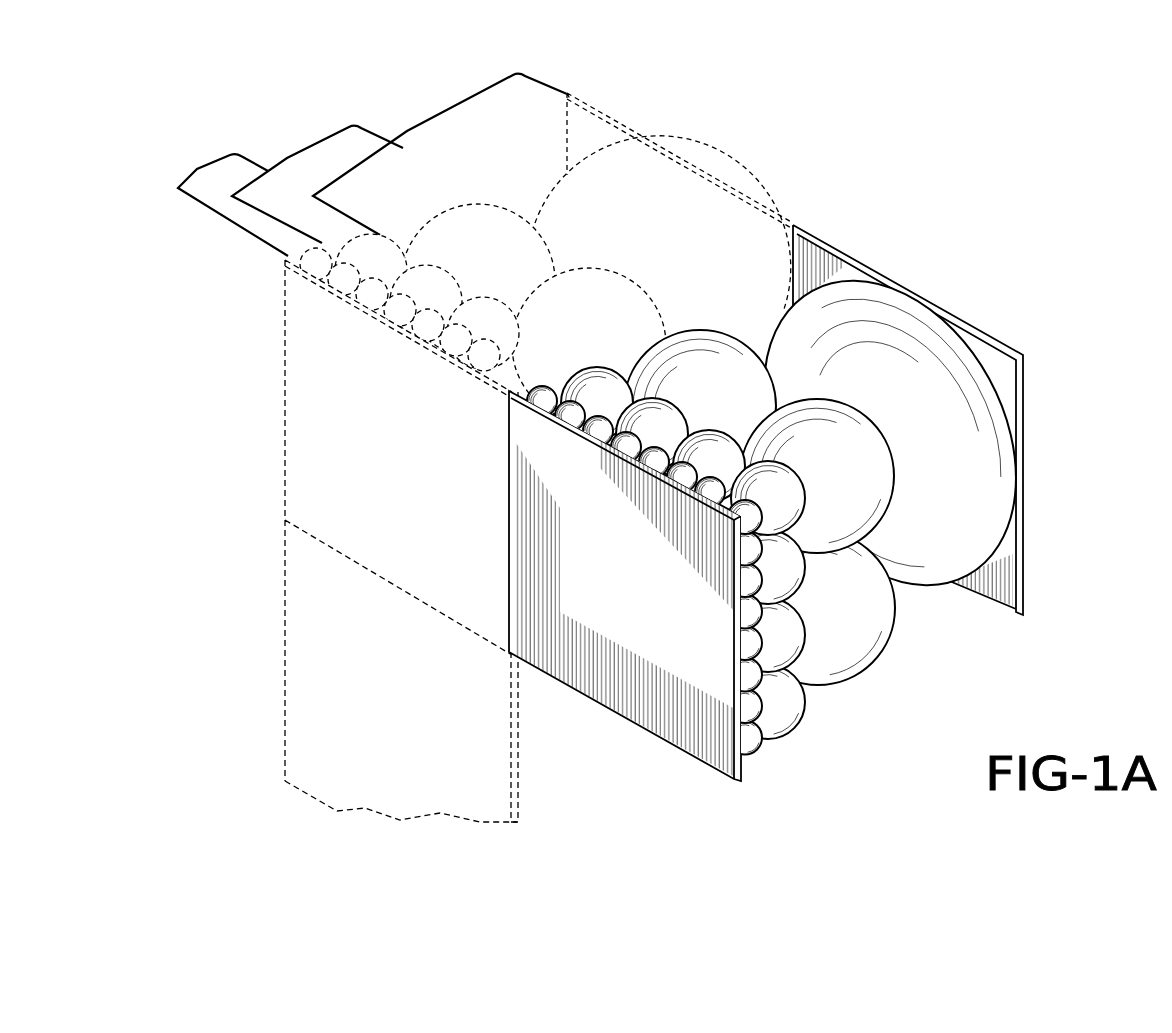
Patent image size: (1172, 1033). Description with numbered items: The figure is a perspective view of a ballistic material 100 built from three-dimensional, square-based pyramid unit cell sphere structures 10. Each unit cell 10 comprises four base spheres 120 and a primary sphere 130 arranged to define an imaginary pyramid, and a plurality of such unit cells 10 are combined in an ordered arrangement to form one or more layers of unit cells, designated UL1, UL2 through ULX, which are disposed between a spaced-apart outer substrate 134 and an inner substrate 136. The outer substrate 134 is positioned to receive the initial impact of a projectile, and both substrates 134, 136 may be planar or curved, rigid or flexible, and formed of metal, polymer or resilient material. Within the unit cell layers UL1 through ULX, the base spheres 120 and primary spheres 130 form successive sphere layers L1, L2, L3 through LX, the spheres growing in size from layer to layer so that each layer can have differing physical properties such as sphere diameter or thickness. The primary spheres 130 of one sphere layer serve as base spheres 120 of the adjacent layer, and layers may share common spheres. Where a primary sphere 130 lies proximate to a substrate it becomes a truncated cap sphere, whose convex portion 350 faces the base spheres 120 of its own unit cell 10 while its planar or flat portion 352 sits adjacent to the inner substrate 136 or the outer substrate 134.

The ballistic material 100 is at (1068, 249).
The square-based pyramid unit cell sphere structure 10 is at (522, 188).
The base sphere 120 is at (428, 297).
The primary sphere 130 is at (634, 193).
The outer substrate 134 is at (285, 440).
The inner substrate 136 is at (722, 180).
The convex portion 350 is at (693, 280).
The planar or flat portion 352 is at (766, 206).
The first unit cell layer UL1 is at (197, 169).
The second unit cell layer UL2 is at (287, 159).
The X-th unit cell layer ULX is at (407, 132).
The first sphere layer L1 is at (748, 745).
The second sphere layer L2 is at (790, 700).
The third sphere layer L3 is at (858, 628).
The X-th sphere layer LX is at (948, 540).